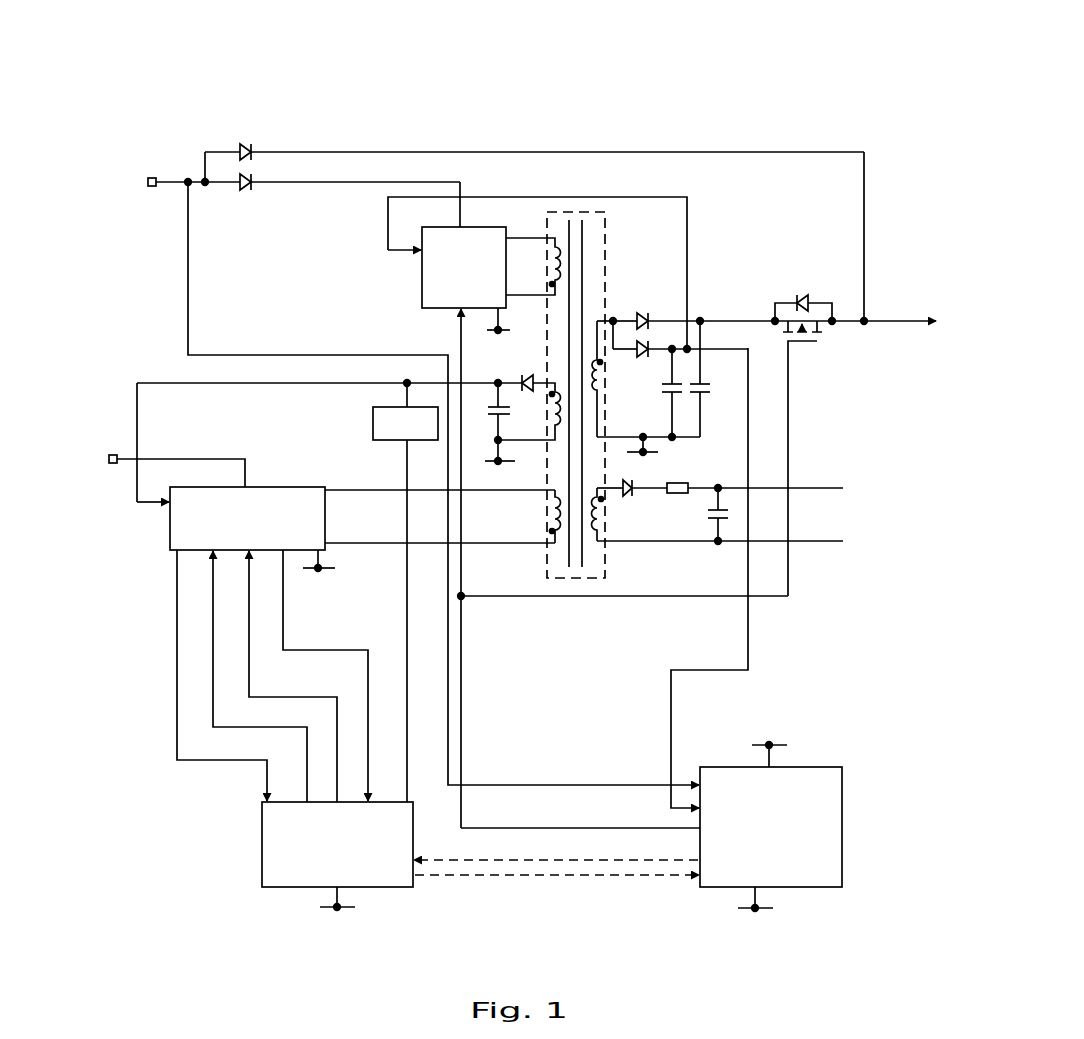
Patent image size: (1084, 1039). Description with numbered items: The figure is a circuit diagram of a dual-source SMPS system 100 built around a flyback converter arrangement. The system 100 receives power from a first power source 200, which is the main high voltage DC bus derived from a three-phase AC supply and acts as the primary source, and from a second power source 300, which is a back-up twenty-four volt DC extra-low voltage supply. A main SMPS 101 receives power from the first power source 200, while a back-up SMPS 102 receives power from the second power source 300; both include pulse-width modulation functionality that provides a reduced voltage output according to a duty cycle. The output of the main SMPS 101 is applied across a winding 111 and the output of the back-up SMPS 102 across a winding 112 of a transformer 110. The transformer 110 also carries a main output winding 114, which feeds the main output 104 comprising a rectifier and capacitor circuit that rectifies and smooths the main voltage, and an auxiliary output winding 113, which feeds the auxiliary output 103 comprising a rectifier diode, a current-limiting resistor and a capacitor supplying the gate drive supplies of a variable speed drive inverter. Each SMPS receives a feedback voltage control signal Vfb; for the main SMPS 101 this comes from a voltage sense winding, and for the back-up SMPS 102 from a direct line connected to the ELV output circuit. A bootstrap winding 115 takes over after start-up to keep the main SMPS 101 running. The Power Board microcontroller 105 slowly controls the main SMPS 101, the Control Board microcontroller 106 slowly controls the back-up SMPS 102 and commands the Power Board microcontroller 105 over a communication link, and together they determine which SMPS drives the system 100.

The dual-source SMPS system 100 is at (506, 82).
The main SMPS 101 is at (168, 541).
The back-up SMPS 102 is at (493, 226).
The auxiliary output 103 is at (721, 472).
The main output 104 is at (884, 336).
The Power Board microcontroller 105 is at (262, 847).
The Control Board microcontroller 106 is at (843, 840).
The transformer 110 is at (605, 226).
The winding 111 is at (553, 523).
The winding 112 is at (556, 247).
The auxiliary output winding 113 is at (604, 520).
The main output winding 114 is at (590, 361).
The bootstrap winding 115 is at (565, 411).
The first power source 200 is at (111, 452).
The second power source 300 is at (155, 176).